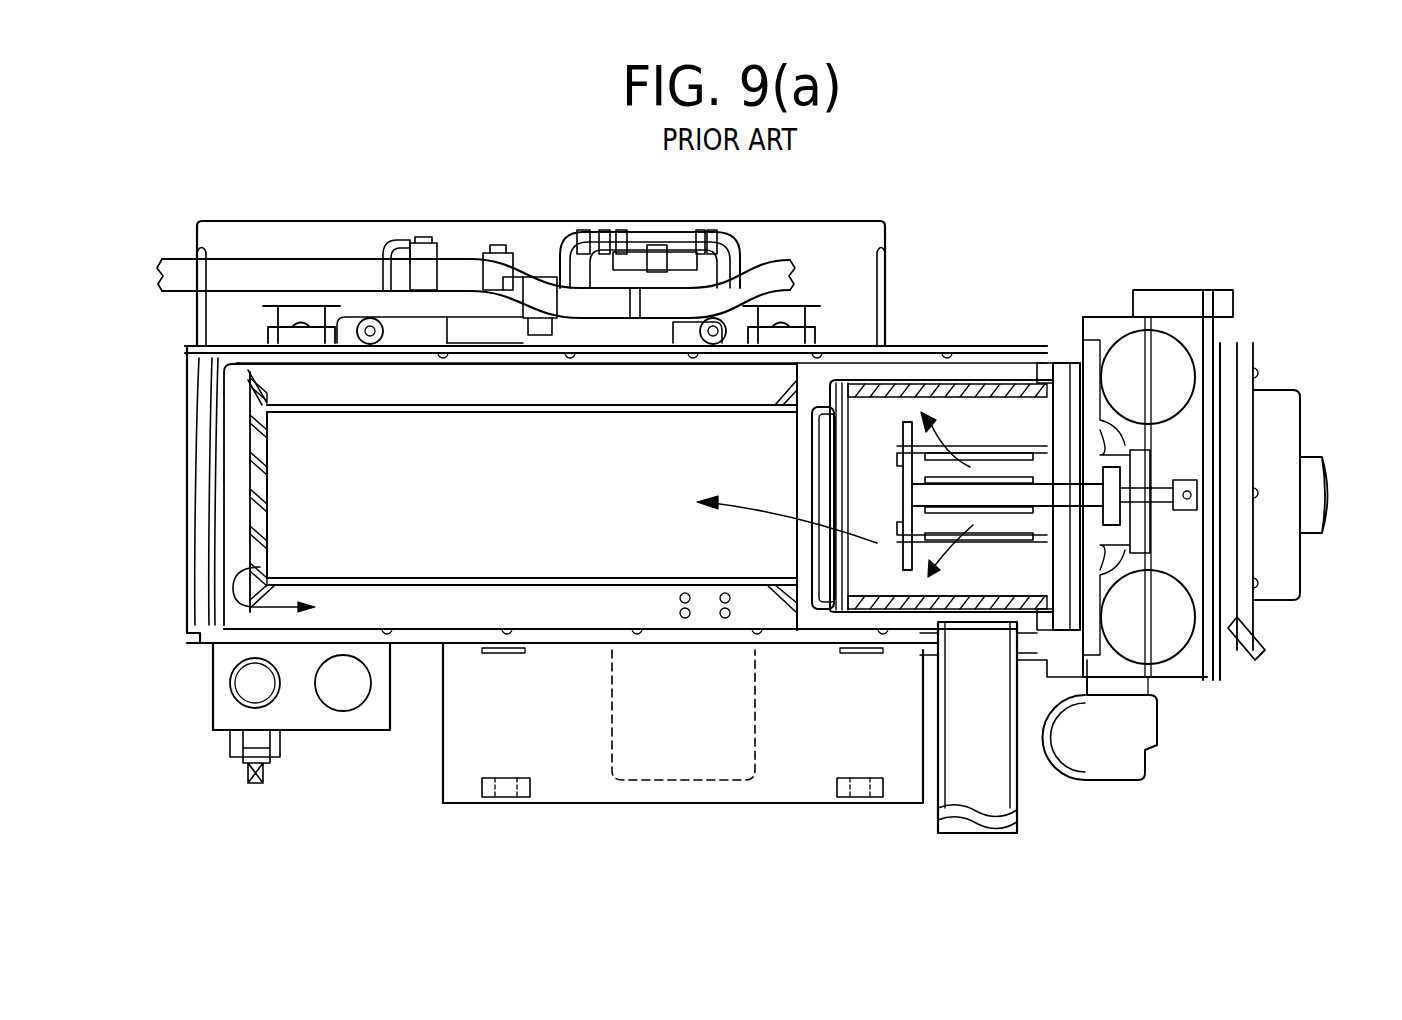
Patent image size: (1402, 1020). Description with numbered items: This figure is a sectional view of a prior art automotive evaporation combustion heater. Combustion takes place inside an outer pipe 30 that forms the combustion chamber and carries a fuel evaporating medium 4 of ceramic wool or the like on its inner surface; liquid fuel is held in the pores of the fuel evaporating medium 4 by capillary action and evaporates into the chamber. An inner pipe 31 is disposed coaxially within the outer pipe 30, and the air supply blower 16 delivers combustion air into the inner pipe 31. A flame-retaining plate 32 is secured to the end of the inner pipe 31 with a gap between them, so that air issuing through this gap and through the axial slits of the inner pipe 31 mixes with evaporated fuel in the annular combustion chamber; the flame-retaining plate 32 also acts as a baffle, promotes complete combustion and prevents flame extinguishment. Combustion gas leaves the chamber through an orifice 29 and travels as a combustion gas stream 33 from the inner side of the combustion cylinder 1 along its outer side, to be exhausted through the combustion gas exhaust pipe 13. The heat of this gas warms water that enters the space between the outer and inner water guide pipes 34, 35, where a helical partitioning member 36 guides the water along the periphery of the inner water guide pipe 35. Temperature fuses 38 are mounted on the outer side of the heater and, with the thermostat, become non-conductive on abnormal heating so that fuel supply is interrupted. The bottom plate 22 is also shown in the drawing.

The combustion cylinder 1 is at (540, 590).
The fuel evaporating medium 4 is at (868, 615).
The combustion gas exhaust pipe 13 is at (1015, 790).
The air supply blower 16 is at (1288, 420).
The bottom plate 22 is at (450, 640).
The orifice 29 is at (812, 555).
The outer pipe 30 is at (908, 385).
The inner pipe 31 is at (1007, 467).
The flame-retaining plate 32 is at (898, 405).
The combustion gas stream 33 is at (270, 595).
The outer water guide pipe 34 is at (800, 642).
The inner water guide pipe 35 is at (676, 642).
The helical partitioning member 36 is at (445, 362).
The temperature fuses 38 is at (283, 315).